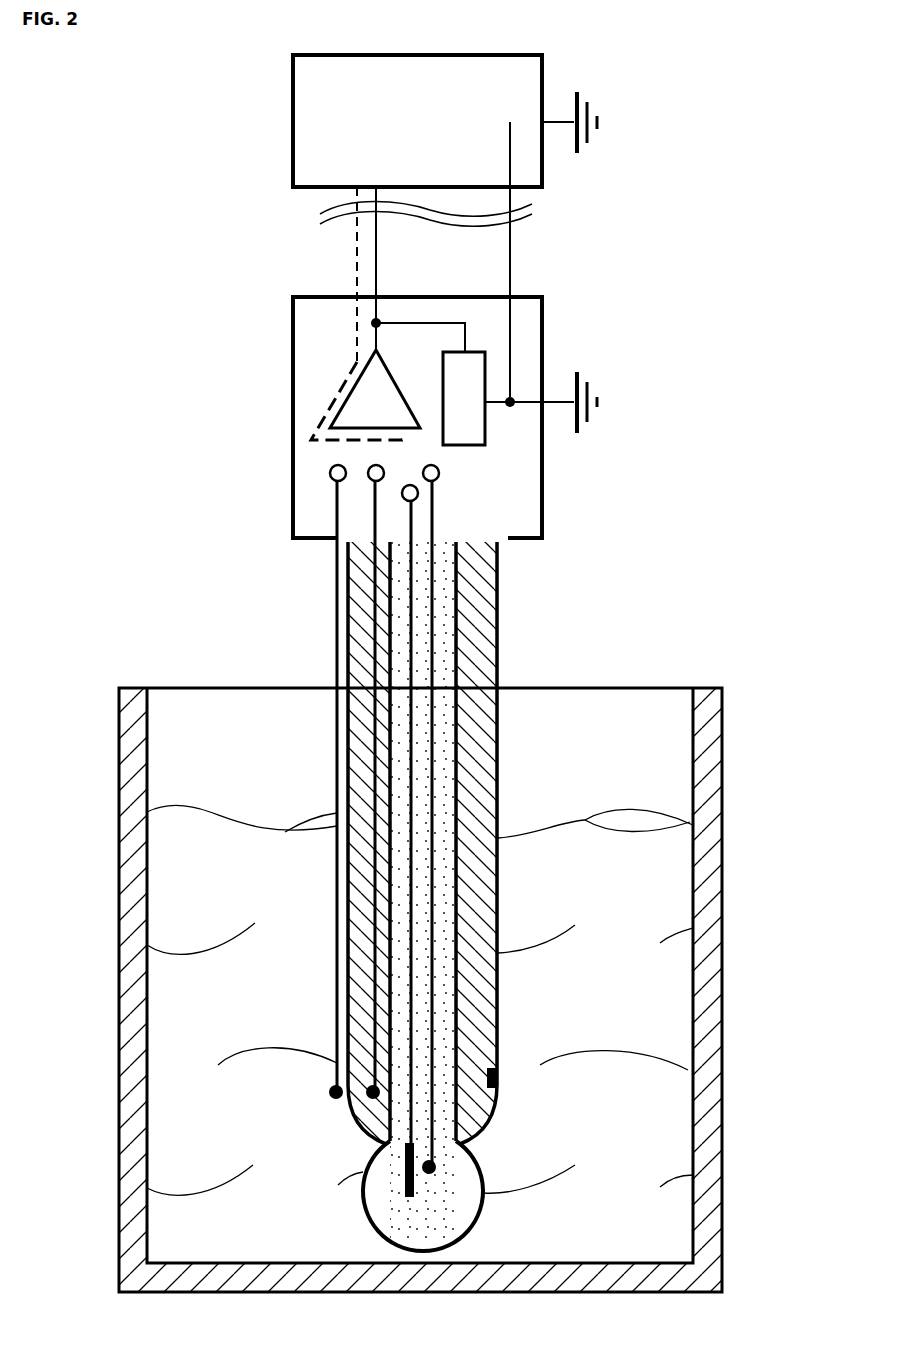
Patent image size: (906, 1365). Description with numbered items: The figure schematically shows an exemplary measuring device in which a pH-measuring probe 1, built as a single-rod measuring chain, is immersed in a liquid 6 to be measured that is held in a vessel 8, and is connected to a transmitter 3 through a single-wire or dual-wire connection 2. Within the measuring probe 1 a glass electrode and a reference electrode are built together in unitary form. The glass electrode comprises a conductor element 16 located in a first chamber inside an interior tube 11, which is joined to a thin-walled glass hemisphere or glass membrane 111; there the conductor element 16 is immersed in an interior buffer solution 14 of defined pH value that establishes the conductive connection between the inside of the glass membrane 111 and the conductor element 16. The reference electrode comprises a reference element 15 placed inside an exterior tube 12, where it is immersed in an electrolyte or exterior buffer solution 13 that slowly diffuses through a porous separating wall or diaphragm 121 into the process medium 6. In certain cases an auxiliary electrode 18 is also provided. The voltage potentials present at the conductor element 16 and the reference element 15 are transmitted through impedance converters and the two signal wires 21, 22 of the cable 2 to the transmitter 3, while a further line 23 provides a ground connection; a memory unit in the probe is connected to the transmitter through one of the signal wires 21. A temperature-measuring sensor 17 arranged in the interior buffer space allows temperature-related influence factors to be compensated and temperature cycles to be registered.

The measuring probe 1 is at (245, 495).
The connection 2 is at (415, 218).
The transmitter 3 is at (417, 121).
The liquid 6 is at (673, 928).
The vessel / container 8 is at (720, 923).
The interior tube 11 is at (458, 625).
The exterior tube 12 is at (493, 642).
The exterior buffer solution 13 is at (453, 847).
The interior buffer solution 14 is at (440, 712).
The reference element 15 is at (372, 763).
The conductor element 16 is at (432, 763).
The temperature-measuring sensor 17 is at (402, 608).
The auxiliary electrode 18 is at (337, 639).
The signal wire 21 is at (389, 268).
The signal wire 22 is at (341, 274).
The ground line 23 is at (524, 262).
The glass membrane 111 is at (483, 1180).
The diaphragm 121 is at (492, 1070).